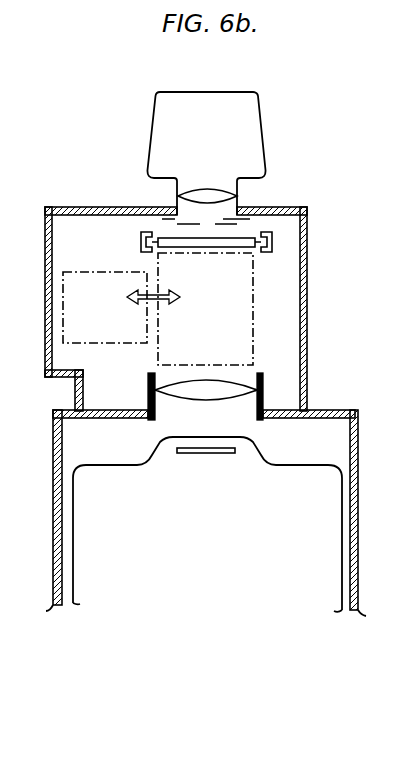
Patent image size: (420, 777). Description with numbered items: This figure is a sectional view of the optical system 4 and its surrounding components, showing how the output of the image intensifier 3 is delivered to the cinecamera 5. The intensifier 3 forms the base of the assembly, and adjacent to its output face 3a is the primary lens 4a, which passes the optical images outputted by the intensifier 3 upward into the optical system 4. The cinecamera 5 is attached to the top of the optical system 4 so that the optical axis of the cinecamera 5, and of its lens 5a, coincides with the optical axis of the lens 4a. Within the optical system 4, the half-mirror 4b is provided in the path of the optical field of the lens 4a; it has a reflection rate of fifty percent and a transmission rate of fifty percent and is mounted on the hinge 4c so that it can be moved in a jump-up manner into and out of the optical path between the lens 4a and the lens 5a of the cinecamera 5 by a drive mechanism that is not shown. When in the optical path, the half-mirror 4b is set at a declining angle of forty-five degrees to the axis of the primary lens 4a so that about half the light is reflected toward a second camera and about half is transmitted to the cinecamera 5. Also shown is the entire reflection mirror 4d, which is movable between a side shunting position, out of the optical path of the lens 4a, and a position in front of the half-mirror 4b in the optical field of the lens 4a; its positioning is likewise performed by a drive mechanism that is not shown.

The intensifier 3 is at (362, 523).
The output face 3a is at (196, 455).
The optical system 4 is at (342, 283).
The lens 4a is at (168, 396).
The half mirror 4b is at (243, 248).
The hinge 4c is at (272, 235).
The entire reflection mirror 4d is at (114, 270).
The cinecamera 5 is at (258, 115).
The lens 5a is at (218, 198).